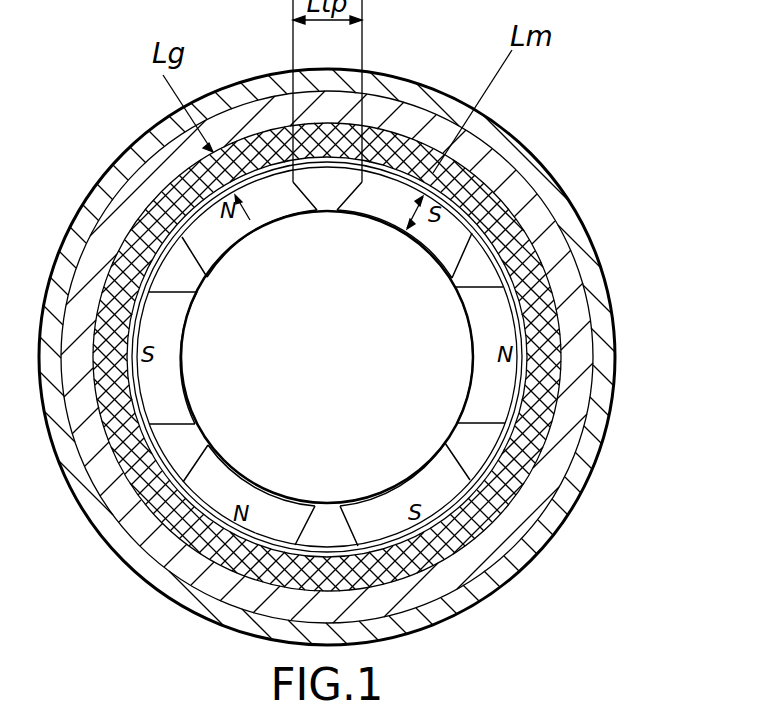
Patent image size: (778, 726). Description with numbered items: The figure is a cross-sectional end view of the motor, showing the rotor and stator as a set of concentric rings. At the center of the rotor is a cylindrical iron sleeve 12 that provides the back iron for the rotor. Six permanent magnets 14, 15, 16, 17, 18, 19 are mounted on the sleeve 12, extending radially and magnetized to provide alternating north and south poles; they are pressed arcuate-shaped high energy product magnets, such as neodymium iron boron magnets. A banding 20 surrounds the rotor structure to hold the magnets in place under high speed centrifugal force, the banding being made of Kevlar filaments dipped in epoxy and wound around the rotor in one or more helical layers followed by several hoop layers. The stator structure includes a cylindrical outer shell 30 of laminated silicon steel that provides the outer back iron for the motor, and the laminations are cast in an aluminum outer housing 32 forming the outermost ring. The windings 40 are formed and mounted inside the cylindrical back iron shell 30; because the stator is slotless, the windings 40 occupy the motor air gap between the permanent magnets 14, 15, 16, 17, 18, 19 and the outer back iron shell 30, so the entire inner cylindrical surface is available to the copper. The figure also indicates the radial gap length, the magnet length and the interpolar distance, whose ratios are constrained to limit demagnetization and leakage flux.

The cylindrical iron sleeve 12 is at (462, 262).
The permanent magnet 14 is at (450, 250).
The permanent magnet 15 is at (496, 402).
The permanent magnet 16 is at (388, 532).
The permanent magnet 17 is at (220, 497).
The permanent magnet 18 is at (175, 402).
The permanent magnet 19 is at (218, 252).
The banding 20 is at (507, 438).
The cylindrical outer shell 30 is at (507, 173).
The aluminum outer housing 32 is at (580, 232).
The windings 40 is at (537, 312).